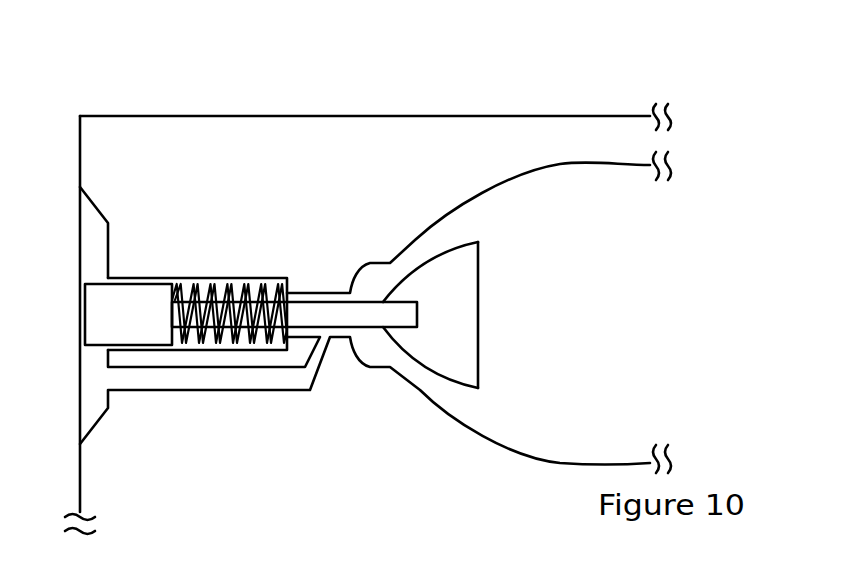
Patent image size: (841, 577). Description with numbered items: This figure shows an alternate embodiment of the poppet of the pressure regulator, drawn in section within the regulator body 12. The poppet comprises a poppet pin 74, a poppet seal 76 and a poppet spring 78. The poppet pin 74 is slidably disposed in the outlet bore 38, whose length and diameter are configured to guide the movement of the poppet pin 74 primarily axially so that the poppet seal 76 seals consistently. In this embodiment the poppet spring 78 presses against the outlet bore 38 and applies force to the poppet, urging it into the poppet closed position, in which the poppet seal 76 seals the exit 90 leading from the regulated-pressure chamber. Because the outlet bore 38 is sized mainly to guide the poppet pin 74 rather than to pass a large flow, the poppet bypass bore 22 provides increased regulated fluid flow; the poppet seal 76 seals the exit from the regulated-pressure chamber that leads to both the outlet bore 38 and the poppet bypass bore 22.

The body 12 is at (462, 116).
The poppet bypass bore 22 is at (235, 378).
The outlet bore 38 is at (125, 278).
The poppet pin 74 is at (85, 327).
The poppet seal 76 is at (485, 290).
The poppet spring 78 is at (210, 283).
The exit 90 is at (337, 337).